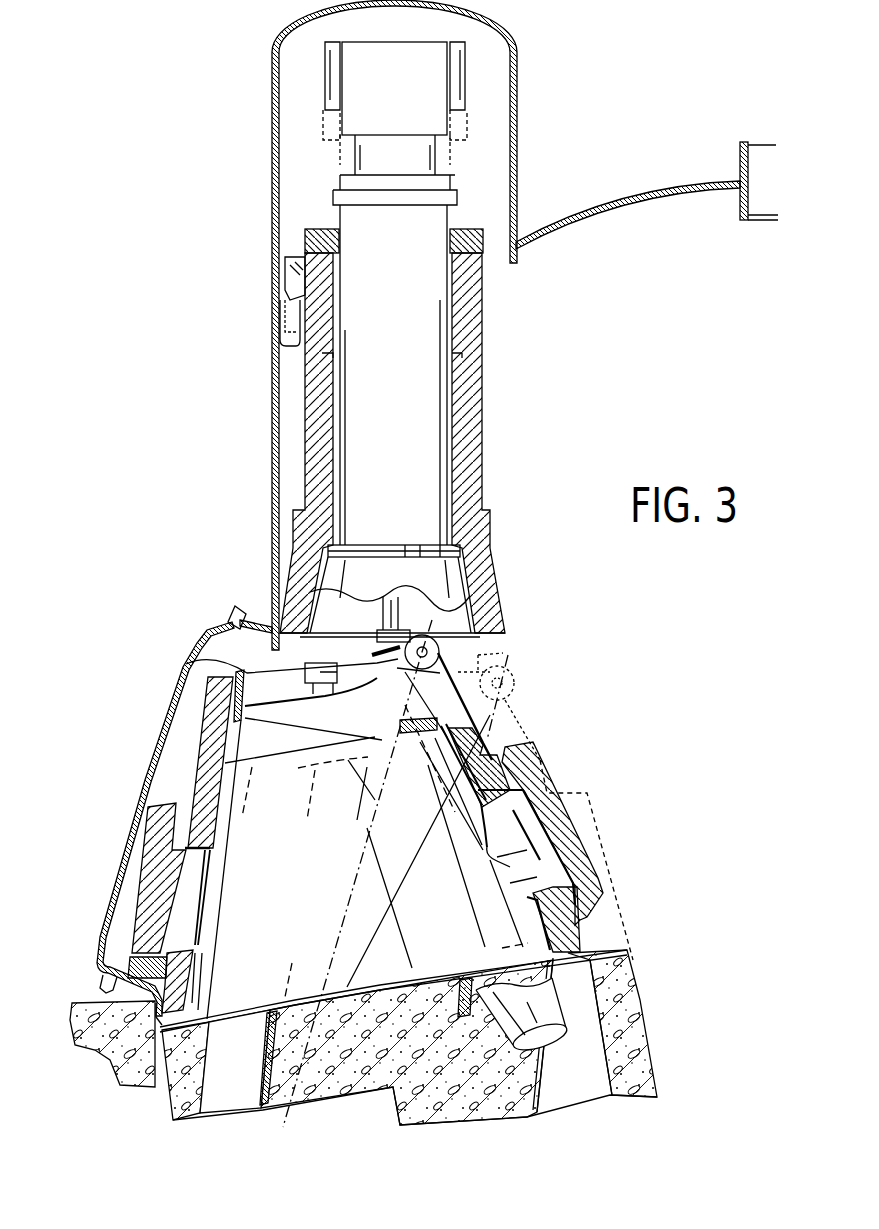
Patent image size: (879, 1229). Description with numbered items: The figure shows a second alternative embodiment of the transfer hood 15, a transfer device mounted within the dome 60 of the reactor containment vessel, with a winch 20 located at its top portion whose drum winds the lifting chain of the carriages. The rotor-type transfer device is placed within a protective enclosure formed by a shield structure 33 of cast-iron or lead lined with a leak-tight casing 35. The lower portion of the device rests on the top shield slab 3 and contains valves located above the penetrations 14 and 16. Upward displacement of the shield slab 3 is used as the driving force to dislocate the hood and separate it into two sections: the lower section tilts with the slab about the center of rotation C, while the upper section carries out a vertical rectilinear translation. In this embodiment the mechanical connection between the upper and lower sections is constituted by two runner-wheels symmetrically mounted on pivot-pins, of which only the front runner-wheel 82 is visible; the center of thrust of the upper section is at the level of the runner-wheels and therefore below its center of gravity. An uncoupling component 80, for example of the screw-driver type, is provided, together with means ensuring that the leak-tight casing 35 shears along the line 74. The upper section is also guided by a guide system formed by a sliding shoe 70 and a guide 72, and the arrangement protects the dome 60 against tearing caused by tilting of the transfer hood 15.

The top shield slab 3 is at (642, 1040).
The penetration 14 is at (570, 1088).
The transfer hood 15 is at (493, 388).
The penetration 16 is at (244, 1097).
The winch 20 is at (408, 102).
The shield structure 33 is at (323, 405).
The leak-tight casing 35 is at (305, 585).
The dome 60 is at (652, 192).
The sliding shoe 70 is at (303, 257).
The guide 72 is at (283, 333).
The shear line 74 is at (186, 666).
The uncoupling component 80 is at (378, 630).
The runner-wheel 82 is at (455, 656).
The center of rotation C is at (292, 1103).